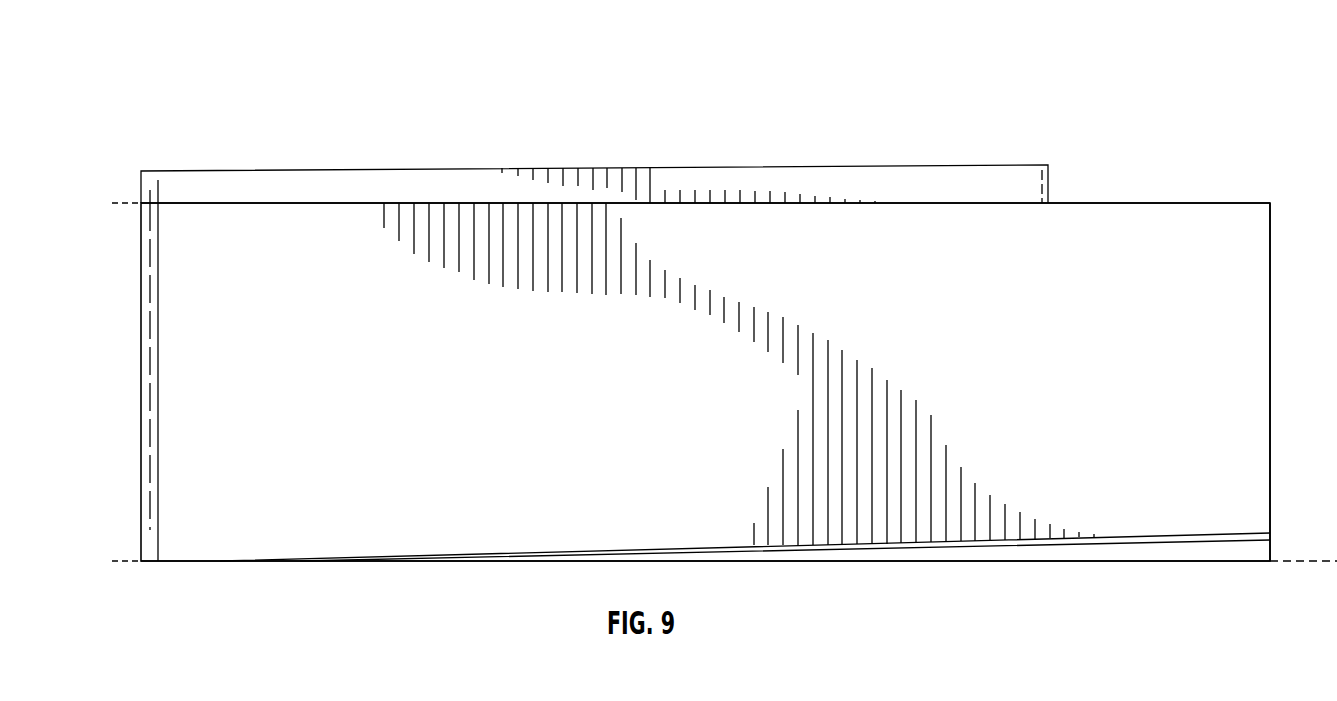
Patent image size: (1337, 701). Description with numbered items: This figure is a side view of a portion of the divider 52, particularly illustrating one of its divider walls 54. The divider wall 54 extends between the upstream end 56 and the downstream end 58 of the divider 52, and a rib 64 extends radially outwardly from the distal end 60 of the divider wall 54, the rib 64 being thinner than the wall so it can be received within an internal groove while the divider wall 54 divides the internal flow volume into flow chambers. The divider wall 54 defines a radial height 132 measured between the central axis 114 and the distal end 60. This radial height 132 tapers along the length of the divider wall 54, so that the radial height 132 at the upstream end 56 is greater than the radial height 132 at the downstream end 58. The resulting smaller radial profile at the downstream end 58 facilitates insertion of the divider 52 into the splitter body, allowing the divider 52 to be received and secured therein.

The divider 52 is at (217, 75).
The divider wall 54 is at (675, 405).
The upstream end 56 is at (114, 151).
The downstream end 58 is at (1288, 140).
The distal end 60 is at (1133, 203).
The rib 64 is at (736, 167).
The central axis 114 is at (1294, 565).
The radial height 132 is at (124, 203).